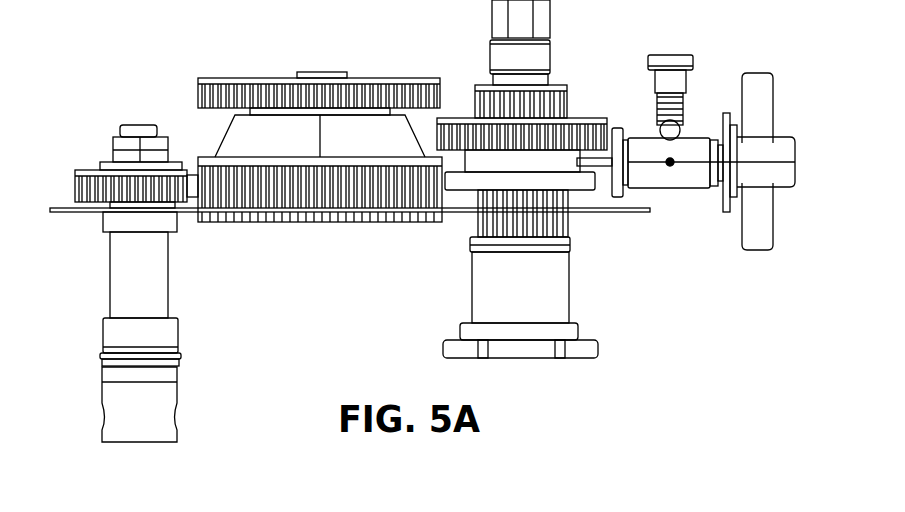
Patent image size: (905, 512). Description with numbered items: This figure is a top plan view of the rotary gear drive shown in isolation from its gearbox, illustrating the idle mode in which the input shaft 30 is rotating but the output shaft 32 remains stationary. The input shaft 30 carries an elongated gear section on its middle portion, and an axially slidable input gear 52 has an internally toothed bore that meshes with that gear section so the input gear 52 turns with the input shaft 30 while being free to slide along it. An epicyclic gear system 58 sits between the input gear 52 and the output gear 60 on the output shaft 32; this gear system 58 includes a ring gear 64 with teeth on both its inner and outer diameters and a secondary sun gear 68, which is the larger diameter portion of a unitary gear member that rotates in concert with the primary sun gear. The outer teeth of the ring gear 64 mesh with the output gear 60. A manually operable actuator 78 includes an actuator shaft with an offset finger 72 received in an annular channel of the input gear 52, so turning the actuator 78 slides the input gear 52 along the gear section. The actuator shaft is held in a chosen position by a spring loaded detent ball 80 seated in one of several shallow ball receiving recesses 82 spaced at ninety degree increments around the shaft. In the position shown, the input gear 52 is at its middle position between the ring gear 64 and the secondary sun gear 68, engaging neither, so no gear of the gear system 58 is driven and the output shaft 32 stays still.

The input shaft 30 is at (558, 297).
The output shaft 32 is at (112, 277).
The input gear 52 is at (586, 112).
The epicyclic gear system 58 is at (383, 68).
The output gear 60 is at (85, 168).
The ring gear 64 is at (278, 198).
The secondary sun gear 68 is at (252, 95).
The finger 72 is at (600, 170).
The manually operable actuator 78 is at (750, 58).
The spring loaded detent ball 80 is at (680, 128).
The ball receiving recesses 82 is at (672, 167).